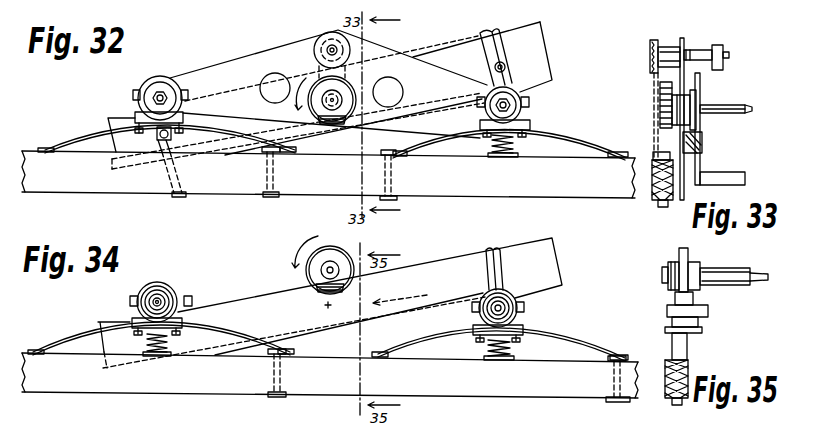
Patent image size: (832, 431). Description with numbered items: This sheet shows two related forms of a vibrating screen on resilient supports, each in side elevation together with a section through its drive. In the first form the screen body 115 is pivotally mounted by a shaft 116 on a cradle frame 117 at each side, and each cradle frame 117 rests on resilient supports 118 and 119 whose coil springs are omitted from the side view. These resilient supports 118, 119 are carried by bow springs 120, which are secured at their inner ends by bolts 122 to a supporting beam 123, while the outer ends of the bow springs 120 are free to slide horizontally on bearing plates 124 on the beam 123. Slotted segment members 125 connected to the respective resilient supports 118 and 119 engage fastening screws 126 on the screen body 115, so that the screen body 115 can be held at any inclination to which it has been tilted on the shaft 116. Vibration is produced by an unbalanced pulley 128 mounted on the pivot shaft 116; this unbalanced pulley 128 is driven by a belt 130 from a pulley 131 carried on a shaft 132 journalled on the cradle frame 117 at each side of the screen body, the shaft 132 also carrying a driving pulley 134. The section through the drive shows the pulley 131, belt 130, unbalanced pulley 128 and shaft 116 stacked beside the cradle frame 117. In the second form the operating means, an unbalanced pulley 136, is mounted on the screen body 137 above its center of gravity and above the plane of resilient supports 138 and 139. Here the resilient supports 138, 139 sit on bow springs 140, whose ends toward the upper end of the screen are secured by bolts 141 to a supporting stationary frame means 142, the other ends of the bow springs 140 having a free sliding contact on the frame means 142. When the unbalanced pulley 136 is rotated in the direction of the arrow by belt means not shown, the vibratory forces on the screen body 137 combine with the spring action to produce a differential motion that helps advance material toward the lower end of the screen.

In FIG. 32, the screen body 115 is at (445, 56).
In FIG. 33, the shaft 116 is at (712, 113).
In FIG. 32, the cradle frame 117 is at (222, 74).
In FIG. 33, the cradle frame 117 is at (700, 96).
In FIG. 32, the resilient support 118 is at (138, 87).
In FIG. 32, the resilient support 119 is at (538, 99).
In FIG. 32, the bow spring 120 is at (85, 137).
In FIG. 32, the bolt 122 is at (274, 188).
In FIG. 32, the supporting beam 123 is at (328, 174).
In FIG. 32, the bearing plate 124 is at (55, 153).
In FIG. 32, the slotted segment member 125 is at (540, 41).
In FIG. 32, the fastening screw 126 is at (110, 130).
In FIG. 32, the unbalanced pulley 128 is at (318, 86).
In FIG. 33, the unbalanced pulley 128 is at (664, 112).
In FIG. 32, the belt 130 is at (345, 78).
In FIG. 33, the belt 130 is at (654, 86).
In FIG. 32, the pulley 131 is at (348, 47).
In FIG. 33, the pulley 131 is at (655, 46).
In FIG. 33, the shaft 132 is at (730, 57).
In FIG. 33, the driving pulley 134 is at (708, 50).
In FIG. 34, the unbalanced pulley 136 is at (347, 256).
In FIG. 35, the unbalanced pulley 136 is at (680, 254).
In FIG. 34, the screen body 137 is at (441, 266).
In FIG. 35, the screen body 137 is at (700, 300).
In FIG. 34, the resilient support 138 is at (135, 297).
In FIG. 34, the resilient support 139 is at (532, 303).
In FIG. 34, the bow spring 140 is at (213, 337).
In FIG. 35, the bow spring 140 is at (688, 346).
In FIG. 34, the bolt 141 is at (276, 386).
In FIG. 34, the supporting stationary frame means 142 is at (330, 375).
In FIG. 35, the supporting stationary frame means 142 is at (690, 372).